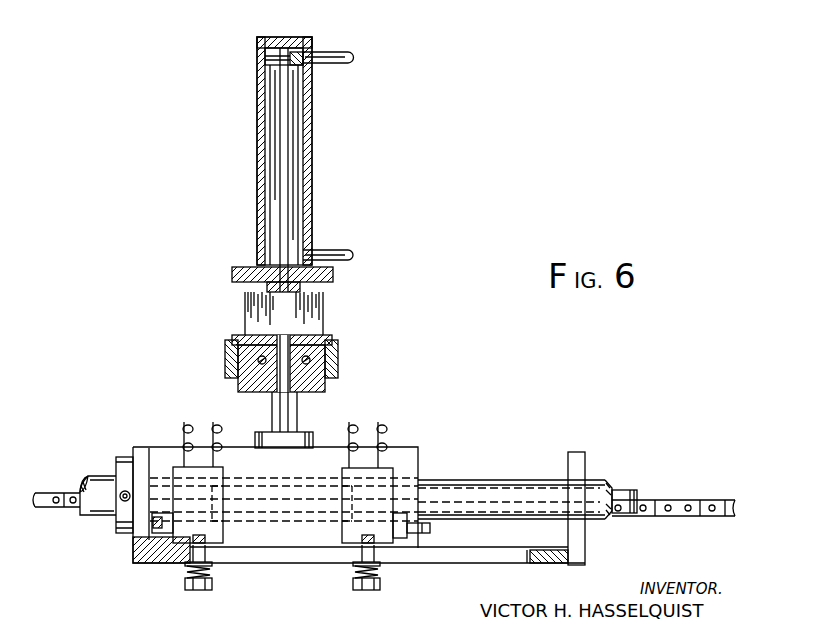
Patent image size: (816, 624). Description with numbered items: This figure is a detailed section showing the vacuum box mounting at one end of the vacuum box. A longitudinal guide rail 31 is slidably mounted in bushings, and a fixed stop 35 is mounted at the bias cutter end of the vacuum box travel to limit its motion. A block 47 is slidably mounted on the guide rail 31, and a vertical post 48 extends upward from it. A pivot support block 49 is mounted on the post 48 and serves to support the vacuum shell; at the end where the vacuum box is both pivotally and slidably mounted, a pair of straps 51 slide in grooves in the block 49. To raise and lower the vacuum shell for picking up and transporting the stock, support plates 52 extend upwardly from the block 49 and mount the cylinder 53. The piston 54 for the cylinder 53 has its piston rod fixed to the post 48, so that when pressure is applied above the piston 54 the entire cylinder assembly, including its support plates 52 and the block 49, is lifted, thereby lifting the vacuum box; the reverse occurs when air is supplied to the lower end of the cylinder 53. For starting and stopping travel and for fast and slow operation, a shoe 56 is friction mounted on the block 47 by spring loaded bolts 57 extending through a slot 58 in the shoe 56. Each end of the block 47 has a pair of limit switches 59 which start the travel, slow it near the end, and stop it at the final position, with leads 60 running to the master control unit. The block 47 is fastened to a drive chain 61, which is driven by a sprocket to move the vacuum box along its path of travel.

The guide rail 31 is at (105, 485).
The fixed stop 35 is at (125, 470).
The block 47 is at (420, 470).
The vertical post 48 is at (278, 408).
The pivot support block 49 is at (325, 338).
The strap 51 is at (230, 356).
The support plate 52 is at (250, 305).
The cylinder 53 is at (258, 152).
The piston 54 is at (300, 70).
The shoe 56 is at (580, 542).
The spring loaded bolt 57 is at (348, 585).
The slot 58 is at (462, 557).
The limit switch 59 is at (185, 470).
The lead 60 is at (214, 424).
The drive chain 61 is at (660, 505).